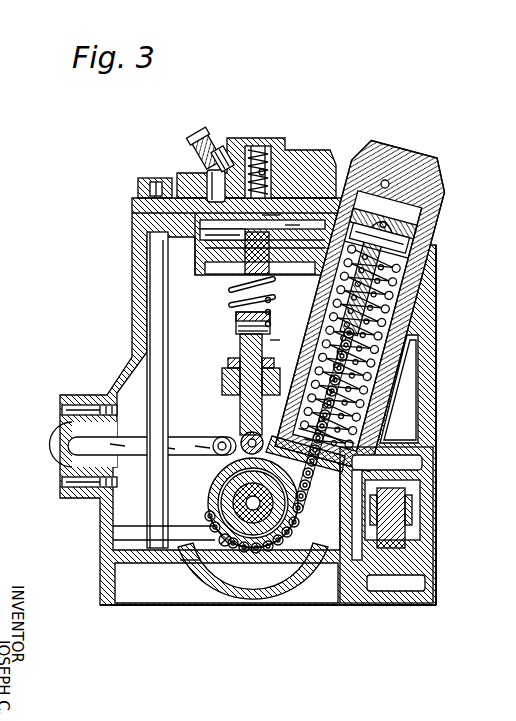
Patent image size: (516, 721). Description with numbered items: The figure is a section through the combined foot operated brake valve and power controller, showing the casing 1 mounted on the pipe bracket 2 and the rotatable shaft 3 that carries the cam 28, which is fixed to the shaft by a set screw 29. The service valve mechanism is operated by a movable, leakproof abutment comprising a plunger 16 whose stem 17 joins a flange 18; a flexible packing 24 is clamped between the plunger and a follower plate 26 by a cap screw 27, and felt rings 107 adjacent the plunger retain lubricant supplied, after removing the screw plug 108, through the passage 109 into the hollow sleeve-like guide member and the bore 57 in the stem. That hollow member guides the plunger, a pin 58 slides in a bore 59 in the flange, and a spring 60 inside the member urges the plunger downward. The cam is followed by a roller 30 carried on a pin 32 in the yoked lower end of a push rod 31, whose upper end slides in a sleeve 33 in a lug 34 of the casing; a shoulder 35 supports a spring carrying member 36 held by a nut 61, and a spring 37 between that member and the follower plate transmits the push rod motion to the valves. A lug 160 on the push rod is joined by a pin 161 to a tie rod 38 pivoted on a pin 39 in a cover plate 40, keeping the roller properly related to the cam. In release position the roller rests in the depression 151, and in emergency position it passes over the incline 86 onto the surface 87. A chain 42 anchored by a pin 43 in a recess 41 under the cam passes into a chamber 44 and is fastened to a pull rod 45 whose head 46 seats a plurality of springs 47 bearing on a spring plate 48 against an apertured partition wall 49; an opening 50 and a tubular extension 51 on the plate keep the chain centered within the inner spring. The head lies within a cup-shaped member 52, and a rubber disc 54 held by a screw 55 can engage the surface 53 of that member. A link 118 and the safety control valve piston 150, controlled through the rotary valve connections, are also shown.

The casing 1 is at (135, 300).
The pipe bracket 2 is at (100, 587).
The rotatable shaft 3 is at (246, 505).
The plunger 16 is at (207, 244).
The stem 17 is at (290, 226).
The flange 18 is at (323, 196).
The flexible packing 24 is at (212, 257).
The follower plate 26 is at (229, 272).
The cap screw 27 is at (229, 300).
The cam 28 is at (208, 492).
The set screw 29 is at (275, 545).
The roller 30 is at (312, 466).
The push rod 31 is at (243, 398).
The pin 32 is at (262, 450).
The sleeve 33 is at (222, 383).
The lug 34 is at (226, 366).
The shoulder 35 is at (278, 343).
The spring carrying member 36 is at (236, 331).
The spring 37 is at (236, 318).
The tie rod 38 is at (153, 442).
The pin 39 is at (78, 446).
The cover plate 40 is at (72, 500).
The recess 41 is at (187, 563).
The chain 42 is at (300, 518).
The pin 43 is at (223, 546).
The chamber 44 is at (403, 317).
The pull rod 45 is at (428, 262).
The head portion 46 is at (433, 235).
The springs 47 is at (436, 278).
The spring plate 48 is at (412, 418).
The partition wall 49 is at (430, 440).
The opening 50 is at (370, 418).
The tubular extension 51 is at (382, 427).
The cup-shaped member 52 is at (433, 188).
The surface 53 is at (433, 205).
The rubber disc 54 is at (413, 224).
The screw 55 is at (398, 212).
The bore 57 is at (270, 218).
The pin 58 is at (207, 180).
The bore 59 is at (180, 220).
The spring 60 is at (250, 180).
The nut 61 is at (266, 313).
The cam incline 86 is at (245, 495).
The cam surface 87 is at (213, 480).
The rings 107 is at (207, 235).
The screw plug 108 is at (205, 145).
The passage 109 is at (224, 150).
The link 118 is at (250, 520).
The safety control valve piston 150 is at (403, 512).
The depression 151 is at (212, 527).
The lug 160 is at (243, 437).
The pin 161 is at (215, 441).